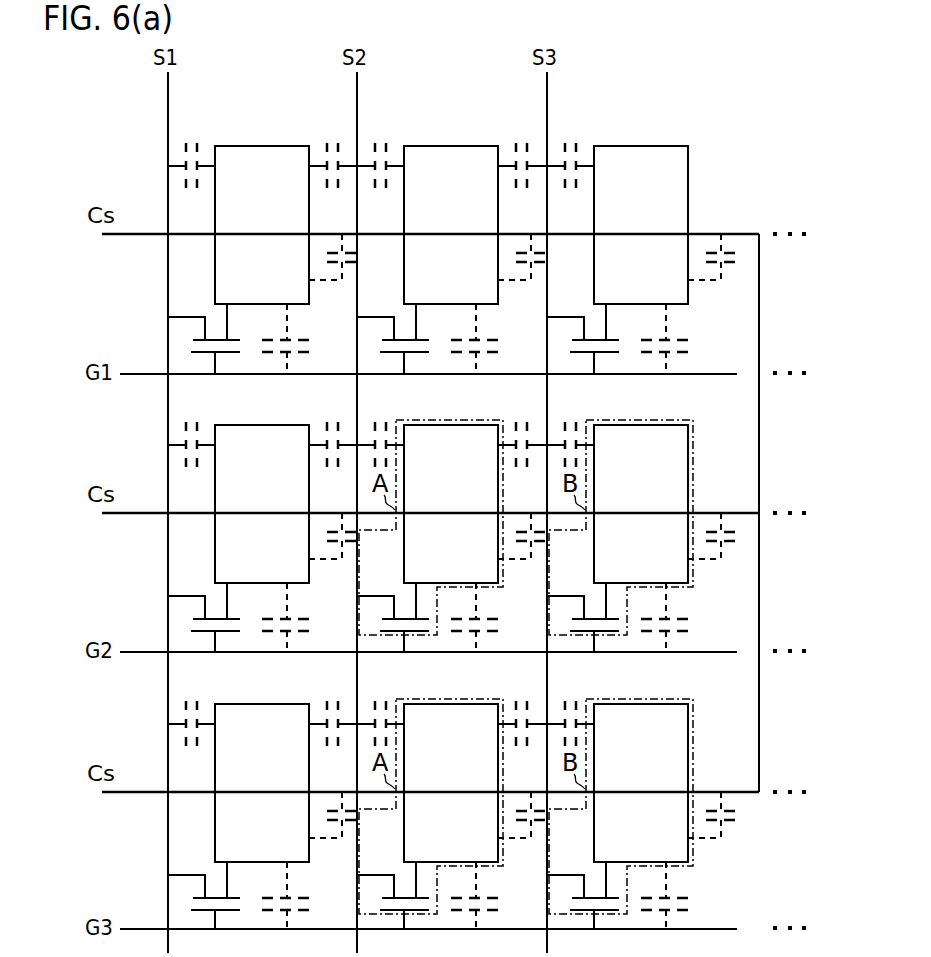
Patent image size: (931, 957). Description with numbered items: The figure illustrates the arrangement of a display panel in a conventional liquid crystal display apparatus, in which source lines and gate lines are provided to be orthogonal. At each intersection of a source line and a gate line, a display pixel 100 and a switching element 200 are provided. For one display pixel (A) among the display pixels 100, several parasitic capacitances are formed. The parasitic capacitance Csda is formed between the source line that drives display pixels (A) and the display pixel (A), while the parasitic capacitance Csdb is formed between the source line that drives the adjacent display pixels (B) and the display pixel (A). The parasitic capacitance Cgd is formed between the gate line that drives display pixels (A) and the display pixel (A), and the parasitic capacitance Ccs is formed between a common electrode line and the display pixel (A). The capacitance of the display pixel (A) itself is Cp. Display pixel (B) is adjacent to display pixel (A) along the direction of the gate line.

The display pixel 100 is at (451, 488).
The switching element 200 is at (393, 596).
The parasitic capacitance Csda is at (387, 423).
The parasitic capacitance Csdb is at (518, 424).
The capacitance of the display pixel Cp is at (431, 527).
The parasitic capacitance Ccs is at (521, 561).
The parasitic capacitance Cgd is at (497, 617).